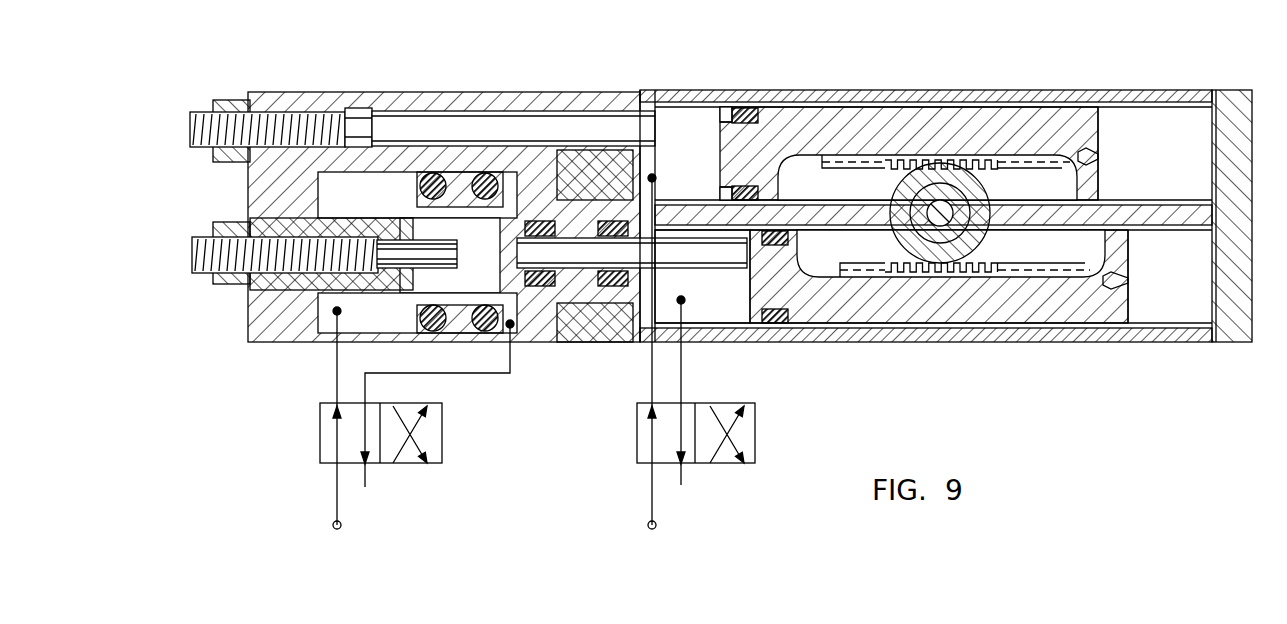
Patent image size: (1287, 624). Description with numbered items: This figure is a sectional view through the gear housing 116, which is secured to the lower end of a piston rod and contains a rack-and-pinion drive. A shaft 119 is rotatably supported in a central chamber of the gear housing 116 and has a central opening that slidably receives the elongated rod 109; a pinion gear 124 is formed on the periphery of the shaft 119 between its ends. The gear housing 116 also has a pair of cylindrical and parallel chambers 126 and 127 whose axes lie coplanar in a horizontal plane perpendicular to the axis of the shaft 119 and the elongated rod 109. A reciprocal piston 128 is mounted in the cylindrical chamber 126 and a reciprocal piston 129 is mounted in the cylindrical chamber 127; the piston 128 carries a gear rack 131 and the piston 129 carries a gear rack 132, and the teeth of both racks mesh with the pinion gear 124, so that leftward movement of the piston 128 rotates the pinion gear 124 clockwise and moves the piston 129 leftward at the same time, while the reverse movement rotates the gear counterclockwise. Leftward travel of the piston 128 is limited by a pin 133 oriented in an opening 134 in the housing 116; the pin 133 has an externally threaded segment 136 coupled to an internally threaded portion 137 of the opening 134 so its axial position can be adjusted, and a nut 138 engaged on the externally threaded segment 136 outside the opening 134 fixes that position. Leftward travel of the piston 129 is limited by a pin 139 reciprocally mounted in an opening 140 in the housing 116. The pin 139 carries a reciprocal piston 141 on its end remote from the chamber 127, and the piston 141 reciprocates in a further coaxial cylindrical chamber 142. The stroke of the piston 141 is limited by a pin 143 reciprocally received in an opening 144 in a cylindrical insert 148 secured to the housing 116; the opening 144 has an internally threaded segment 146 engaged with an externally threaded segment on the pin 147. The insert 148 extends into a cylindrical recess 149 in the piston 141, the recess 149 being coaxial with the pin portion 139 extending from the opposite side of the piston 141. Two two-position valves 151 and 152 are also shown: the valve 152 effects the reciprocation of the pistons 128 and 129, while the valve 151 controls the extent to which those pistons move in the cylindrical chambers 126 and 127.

The elongated rod 109 is at (928, 222).
The gear housing 116 is at (805, 90).
The shaft 119 is at (962, 203).
The pinion gear 124 is at (902, 186).
The cylindrical chamber 126 is at (1113, 117).
The cylindrical chamber 127 is at (1152, 312).
The reciprocal piston 128 is at (945, 120).
The reciprocal piston 129 is at (960, 315).
The gear rack 131 is at (840, 173).
The gear rack 132 is at (1020, 265).
The pin 133 is at (518, 115).
The opening 134 is at (455, 115).
The externally threaded segment 136 is at (288, 114).
The internally threaded portion 137 is at (324, 112).
The nut 138 is at (224, 102).
The pin 139 is at (697, 265).
The opening 140 is at (584, 270).
The reciprocal piston 141 is at (452, 340).
The cylindrical chamber 142 is at (362, 342).
The pin 143 is at (398, 218).
The opening 144 is at (318, 268).
The internally threaded segment 146 is at (285, 240).
The pin 147 is at (278, 268).
The cylindrical insert 148 is at (358, 280).
The cylindrical recess 149 is at (480, 293).
The two-position valve 151 is at (444, 445).
The two-position valve 152 is at (758, 445).